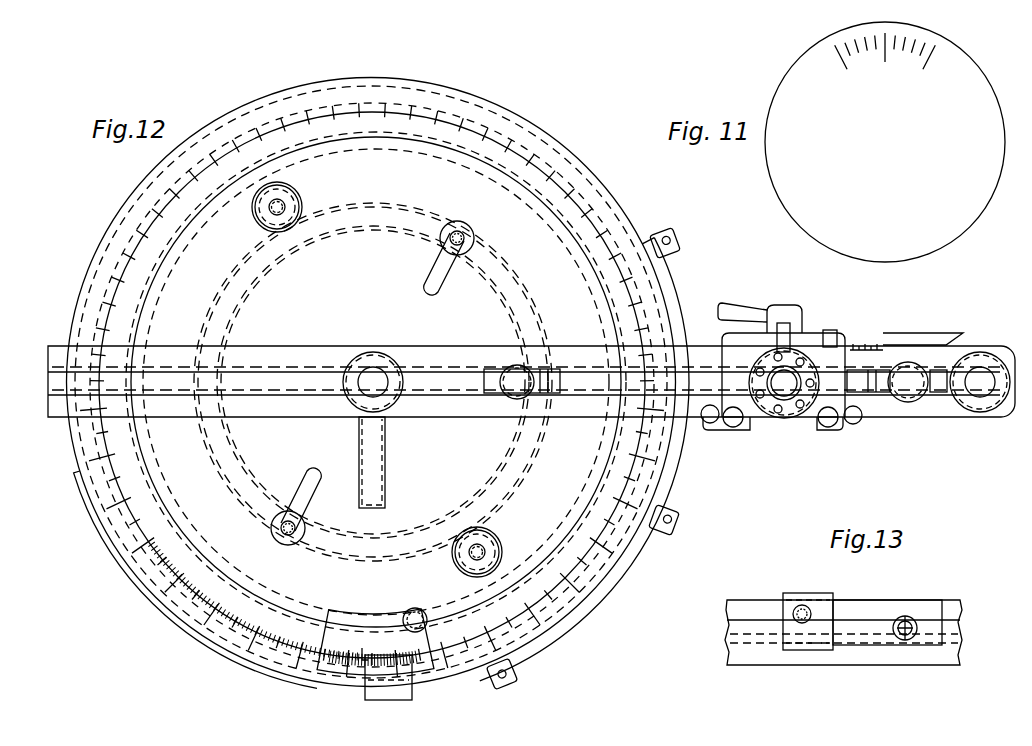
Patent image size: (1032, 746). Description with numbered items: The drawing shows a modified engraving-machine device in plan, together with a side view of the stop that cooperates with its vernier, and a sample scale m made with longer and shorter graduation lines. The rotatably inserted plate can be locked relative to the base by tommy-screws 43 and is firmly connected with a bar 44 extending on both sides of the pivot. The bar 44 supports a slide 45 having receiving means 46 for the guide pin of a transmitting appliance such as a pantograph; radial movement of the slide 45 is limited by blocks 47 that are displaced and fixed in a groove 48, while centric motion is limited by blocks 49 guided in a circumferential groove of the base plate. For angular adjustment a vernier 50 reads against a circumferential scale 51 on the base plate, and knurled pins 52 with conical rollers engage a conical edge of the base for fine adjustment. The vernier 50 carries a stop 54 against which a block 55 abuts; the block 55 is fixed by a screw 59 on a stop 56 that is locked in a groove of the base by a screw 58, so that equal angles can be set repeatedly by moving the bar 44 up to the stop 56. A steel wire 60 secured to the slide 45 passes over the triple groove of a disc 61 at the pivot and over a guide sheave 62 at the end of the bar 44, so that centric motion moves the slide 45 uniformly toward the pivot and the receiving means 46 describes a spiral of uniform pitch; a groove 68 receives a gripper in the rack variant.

In FIG. 11, the scale m is at (908, 52).
In FIG. 12, the tommy-screws 43 is at (426, 286).
In FIG. 12, the bar 44 is at (118, 408).
In FIG. 12, the slide 45 is at (806, 431).
In FIG. 12, the receiving means 46 is at (783, 391).
In FIG. 12, the blocks 47 is at (496, 389).
In FIG. 12, the groove 48 is at (285, 367).
In FIG. 12, the blocks 49 is at (662, 270).
In FIG. 12, the vernier 50 is at (312, 643).
In FIG. 12, the graduated ring 51 is at (223, 582).
In FIG. 12, the knurled pins 52 is at (289, 216).
In FIG. 12, the stop 54 is at (350, 662).
In FIG. 12, the block 55 is at (372, 688).
In FIG. 13, the block 55 is at (812, 598).
In FIG. 12, the stop 56 is at (517, 656).
In FIG. 13, the stop 56 is at (924, 604).
In FIG. 12, the screw 58 is at (511, 679).
In FIG. 13, the screw 58 is at (900, 617).
In FIG. 13, the screw 59 is at (795, 608).
In FIG. 12, the steel wire 60 is at (439, 417).
In FIG. 12, the disc 61 is at (359, 401).
In FIG. 12, the guide sheave 62 is at (978, 405).
In FIG. 12, the groove 68 is at (383, 492).